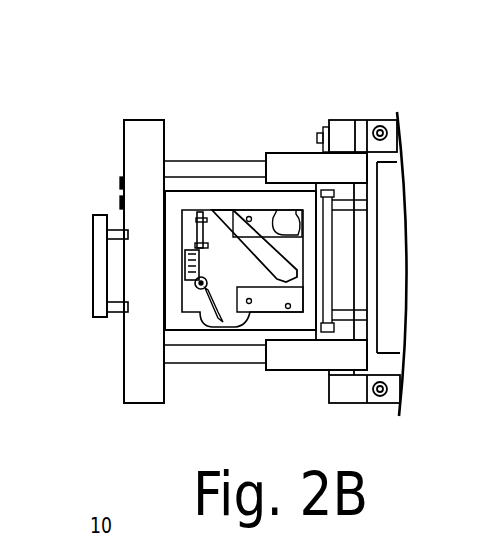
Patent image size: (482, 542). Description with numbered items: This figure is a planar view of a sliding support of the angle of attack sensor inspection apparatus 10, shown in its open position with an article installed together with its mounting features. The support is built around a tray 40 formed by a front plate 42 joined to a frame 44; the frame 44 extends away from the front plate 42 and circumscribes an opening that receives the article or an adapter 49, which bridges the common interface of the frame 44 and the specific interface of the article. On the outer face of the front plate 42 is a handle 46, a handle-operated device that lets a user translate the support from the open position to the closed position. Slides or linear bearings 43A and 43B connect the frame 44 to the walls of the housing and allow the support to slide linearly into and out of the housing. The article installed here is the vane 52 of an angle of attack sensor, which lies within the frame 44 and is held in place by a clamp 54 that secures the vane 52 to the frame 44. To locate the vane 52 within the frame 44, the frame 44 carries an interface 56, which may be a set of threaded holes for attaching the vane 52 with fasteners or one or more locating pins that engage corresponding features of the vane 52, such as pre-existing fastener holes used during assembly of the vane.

The injection molding apparatus 10 is at (422, 98).
The tray 40 is at (108, 366).
The front plate 42 is at (123, 120).
The slide 43A is at (285, 152).
The slide 43B is at (285, 360).
The frame 44 is at (220, 185).
The handle 46 is at (97, 270).
The adapter 49 is at (260, 200).
The vane 52 is at (272, 258).
The clamp 54 is at (208, 276).
The interface 56 is at (197, 206).